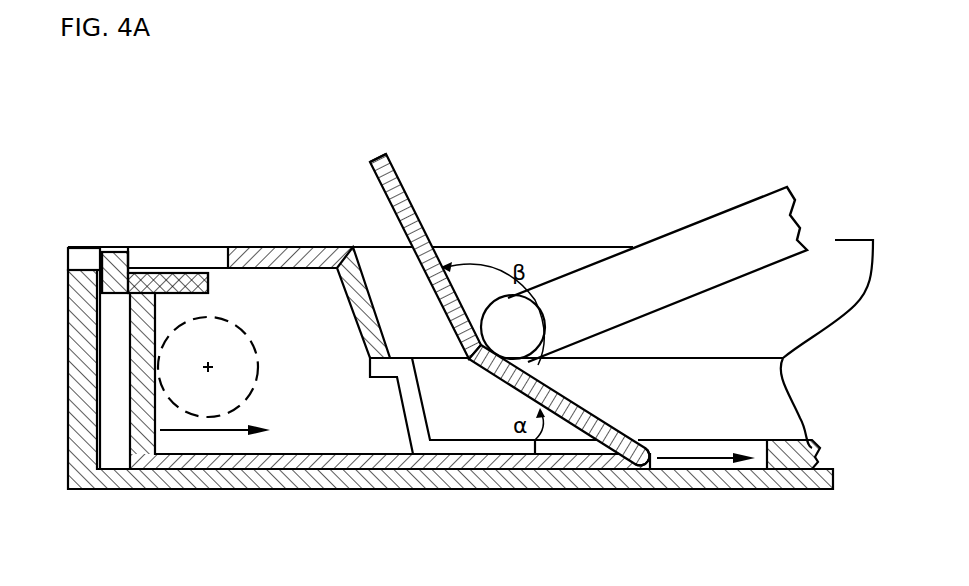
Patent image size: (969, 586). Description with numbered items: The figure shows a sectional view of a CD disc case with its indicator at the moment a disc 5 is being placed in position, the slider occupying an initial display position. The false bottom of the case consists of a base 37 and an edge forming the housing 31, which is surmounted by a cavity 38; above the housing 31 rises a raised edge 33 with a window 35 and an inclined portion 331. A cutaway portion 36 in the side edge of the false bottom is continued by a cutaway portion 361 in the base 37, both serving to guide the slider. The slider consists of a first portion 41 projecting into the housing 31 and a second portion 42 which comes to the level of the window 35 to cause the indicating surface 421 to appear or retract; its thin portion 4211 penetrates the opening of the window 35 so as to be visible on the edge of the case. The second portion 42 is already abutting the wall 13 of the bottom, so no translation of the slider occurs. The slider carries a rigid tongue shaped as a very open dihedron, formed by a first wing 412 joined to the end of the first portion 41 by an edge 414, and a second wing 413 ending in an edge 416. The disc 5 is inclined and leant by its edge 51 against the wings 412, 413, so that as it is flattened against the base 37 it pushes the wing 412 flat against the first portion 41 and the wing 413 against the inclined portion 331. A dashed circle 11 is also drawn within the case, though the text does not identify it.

The disc 5 is at (690, 260).
The roller 11 is at (258, 378).
The side 13 is at (70, 392).
The housing 31 is at (763, 385).
The raised edge 33 is at (259, 243).
The inclined portion 331 is at (372, 274).
The window 35 is at (172, 255).
The cutaway portion 36 is at (405, 412).
The cutaway portion 361 is at (673, 460).
The base 37 is at (797, 445).
The cavity 38 is at (766, 324).
The first portion 41 is at (433, 480).
The first wing 412 is at (596, 404).
The second wing 413 is at (422, 232).
The edge 414 is at (657, 452).
The edge 416 is at (380, 160).
The second portion 42 is at (143, 470).
The indicating surface 421 is at (200, 268).
The portion 4211 is at (116, 250).
The edge 51 is at (490, 339).